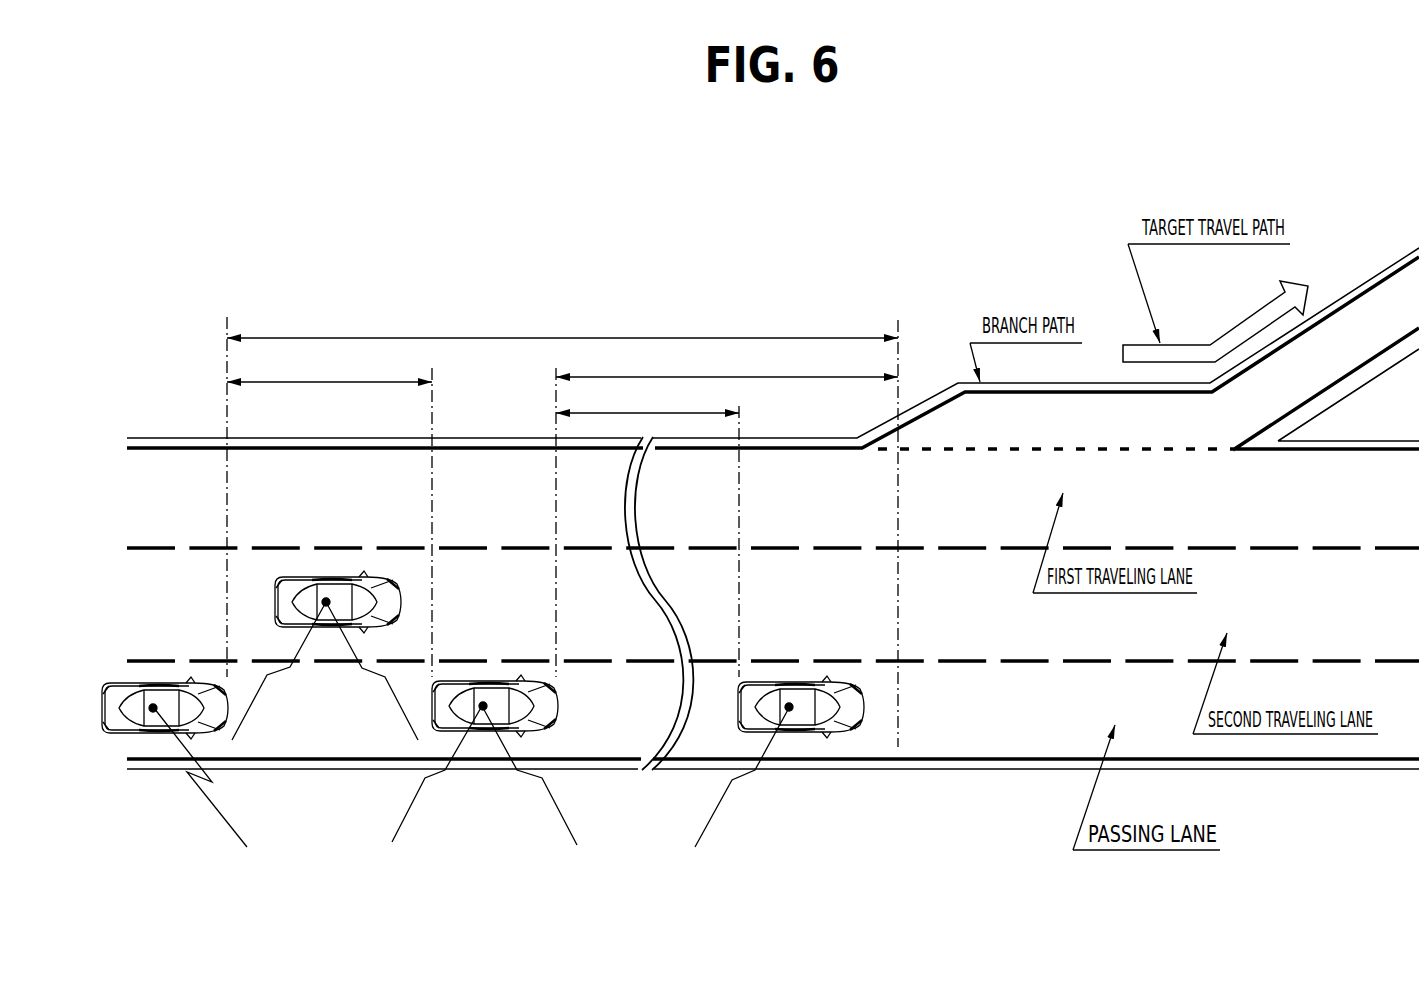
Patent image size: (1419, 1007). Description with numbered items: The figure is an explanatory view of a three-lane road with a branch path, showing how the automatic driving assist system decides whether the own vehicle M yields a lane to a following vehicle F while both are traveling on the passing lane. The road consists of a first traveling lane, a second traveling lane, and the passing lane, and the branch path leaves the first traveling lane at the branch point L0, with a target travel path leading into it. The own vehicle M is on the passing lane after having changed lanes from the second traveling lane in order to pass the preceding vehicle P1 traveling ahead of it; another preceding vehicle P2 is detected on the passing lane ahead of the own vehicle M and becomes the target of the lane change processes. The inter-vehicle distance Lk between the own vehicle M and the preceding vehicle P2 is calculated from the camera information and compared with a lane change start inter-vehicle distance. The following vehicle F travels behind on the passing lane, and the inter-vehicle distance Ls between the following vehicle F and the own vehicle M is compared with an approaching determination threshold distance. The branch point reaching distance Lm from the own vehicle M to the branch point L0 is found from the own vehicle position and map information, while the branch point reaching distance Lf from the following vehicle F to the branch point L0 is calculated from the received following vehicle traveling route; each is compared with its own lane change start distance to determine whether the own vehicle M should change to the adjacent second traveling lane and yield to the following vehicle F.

The following vehicle F is at (161, 683).
The preceding vehicle P1 is at (334, 577).
The own vehicle M is at (492, 681).
The preceding vehicle P2 is at (800, 682).
The branch point L0 is at (902, 519).
The branch point reaching distance Lf is at (562, 492).
The inter-vehicle distance Ls is at (329, 515).
The branch point reaching distance Lm is at (727, 512).
The inter-vehicle distance Lk is at (647, 530).